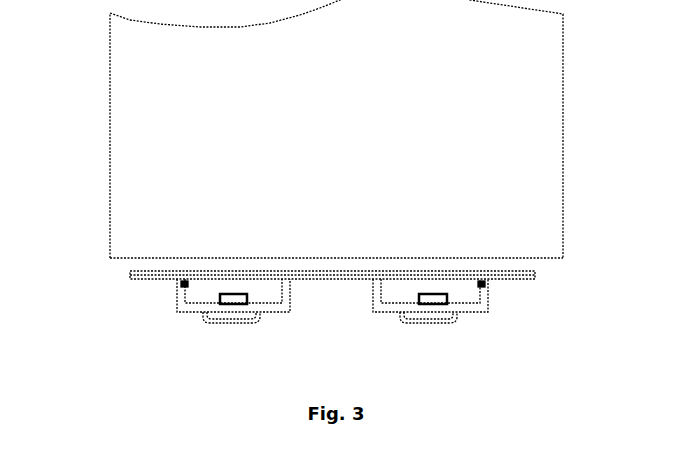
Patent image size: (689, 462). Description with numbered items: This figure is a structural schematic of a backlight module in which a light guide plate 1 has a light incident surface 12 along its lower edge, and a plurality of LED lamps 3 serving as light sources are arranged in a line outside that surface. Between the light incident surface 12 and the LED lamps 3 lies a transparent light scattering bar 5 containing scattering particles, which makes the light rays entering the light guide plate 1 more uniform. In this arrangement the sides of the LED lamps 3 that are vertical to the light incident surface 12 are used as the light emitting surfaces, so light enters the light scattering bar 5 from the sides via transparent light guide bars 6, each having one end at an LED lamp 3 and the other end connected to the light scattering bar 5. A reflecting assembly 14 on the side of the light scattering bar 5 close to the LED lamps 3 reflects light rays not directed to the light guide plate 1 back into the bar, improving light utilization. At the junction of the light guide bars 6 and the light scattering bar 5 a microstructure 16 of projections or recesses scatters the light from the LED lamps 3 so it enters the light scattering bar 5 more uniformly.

The light guide plate 1 is at (143, 175).
The light incident surface 12 is at (155, 258).
The light scattering bar 5 is at (537, 273).
The light guide bar 6 is at (178, 298).
The reflecting assembly 14 is at (248, 300).
The LED lamp 3 is at (243, 316).
The microstructure 16 is at (183, 283).